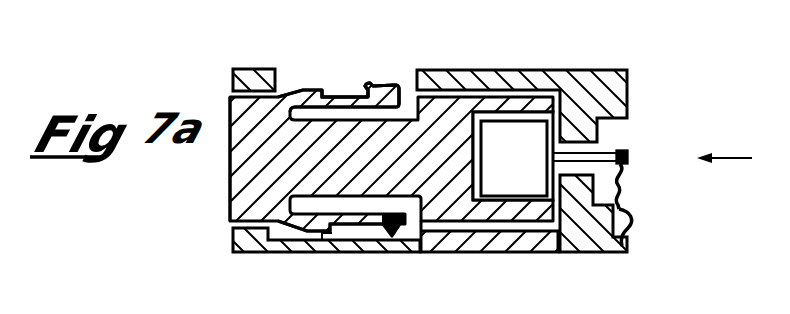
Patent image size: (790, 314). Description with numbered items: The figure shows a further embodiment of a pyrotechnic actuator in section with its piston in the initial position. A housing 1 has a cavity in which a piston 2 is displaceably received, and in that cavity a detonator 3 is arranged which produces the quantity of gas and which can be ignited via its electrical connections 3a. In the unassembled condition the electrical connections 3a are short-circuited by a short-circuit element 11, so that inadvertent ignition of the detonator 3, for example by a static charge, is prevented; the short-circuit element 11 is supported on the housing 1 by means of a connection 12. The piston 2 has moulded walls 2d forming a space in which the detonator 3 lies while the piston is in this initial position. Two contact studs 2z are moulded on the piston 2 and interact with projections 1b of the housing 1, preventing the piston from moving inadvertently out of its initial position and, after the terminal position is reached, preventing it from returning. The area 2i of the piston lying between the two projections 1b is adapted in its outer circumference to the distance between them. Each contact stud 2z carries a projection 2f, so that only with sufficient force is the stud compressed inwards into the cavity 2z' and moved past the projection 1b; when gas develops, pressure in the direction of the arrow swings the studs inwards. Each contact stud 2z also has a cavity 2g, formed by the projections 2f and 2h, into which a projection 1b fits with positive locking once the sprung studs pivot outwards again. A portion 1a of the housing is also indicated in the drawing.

The housing 1 is at (563, 72).
The engaging portion of housing 1a is at (341, 236).
The projection of the housing 1b is at (252, 75).
The piston 2 is at (436, 108).
The moulded walls 2d is at (512, 210).
The projection of the contact stud 2f is at (312, 88).
The cavity of the contact stud 2g is at (345, 95).
The projection of the contact stud 2h is at (384, 82).
The area of the piston 2i is at (240, 174).
The contact stud 2z is at (327, 264).
The cavity 2z' is at (397, 250).
The detonator 3 is at (517, 135).
The electrical connections 3a is at (620, 157).
The short-circuit element 11 is at (633, 182).
The connection 12 is at (633, 216).